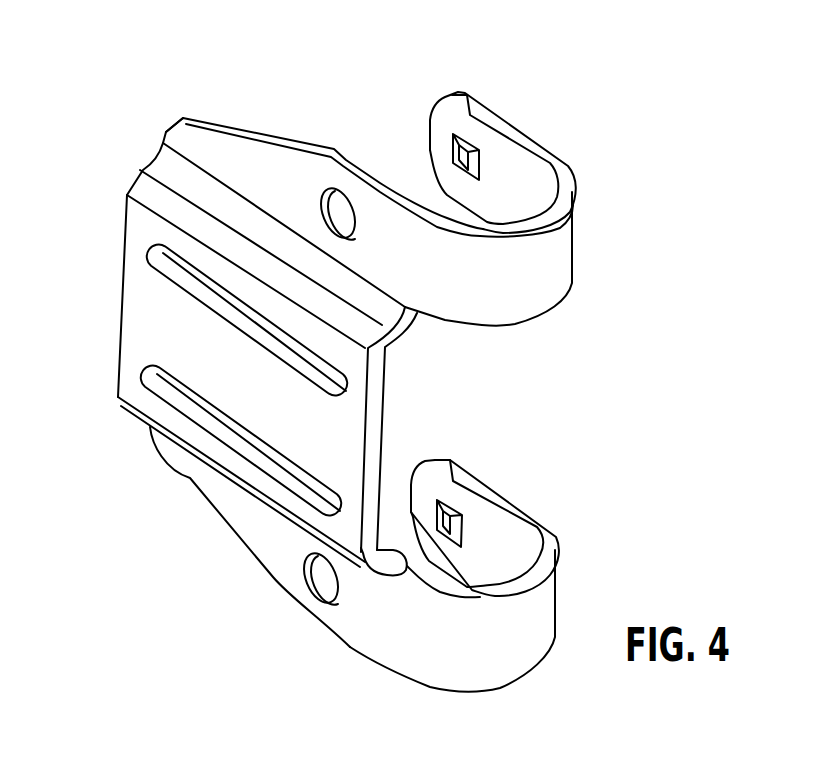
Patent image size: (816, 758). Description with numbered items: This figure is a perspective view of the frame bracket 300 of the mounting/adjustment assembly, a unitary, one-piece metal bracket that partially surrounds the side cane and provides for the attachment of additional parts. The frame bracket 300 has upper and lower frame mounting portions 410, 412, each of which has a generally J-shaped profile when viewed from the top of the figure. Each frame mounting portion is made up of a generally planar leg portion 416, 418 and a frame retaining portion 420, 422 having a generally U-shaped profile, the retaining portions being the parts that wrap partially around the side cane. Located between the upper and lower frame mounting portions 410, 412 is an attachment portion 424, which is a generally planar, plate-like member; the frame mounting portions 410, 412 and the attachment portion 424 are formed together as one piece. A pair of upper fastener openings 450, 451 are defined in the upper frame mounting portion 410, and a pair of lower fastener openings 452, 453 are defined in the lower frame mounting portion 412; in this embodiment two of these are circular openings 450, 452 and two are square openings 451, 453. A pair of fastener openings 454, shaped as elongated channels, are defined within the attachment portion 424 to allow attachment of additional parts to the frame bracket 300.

The frame bracket 300 is at (346, 105).
The upper frame mounting portion 410 is at (560, 233).
The lower frame mounting portion 412 is at (375, 624).
The leg portion 416 is at (257, 163).
The leg portion 418 is at (252, 533).
The frame retaining portion 420 is at (556, 163).
The frame retaining portion 422 is at (557, 592).
The attachment portion 424 is at (340, 425).
The upper fastener opening 450 is at (348, 191).
The upper fastener opening 451 is at (467, 136).
The lower fastener opening 452 is at (308, 590).
The lower fastener opening 453 is at (450, 510).
The fastener openings 454 is at (197, 300).